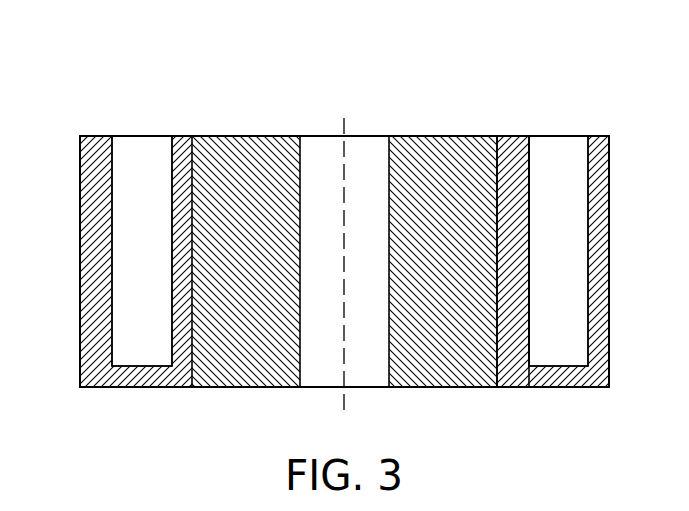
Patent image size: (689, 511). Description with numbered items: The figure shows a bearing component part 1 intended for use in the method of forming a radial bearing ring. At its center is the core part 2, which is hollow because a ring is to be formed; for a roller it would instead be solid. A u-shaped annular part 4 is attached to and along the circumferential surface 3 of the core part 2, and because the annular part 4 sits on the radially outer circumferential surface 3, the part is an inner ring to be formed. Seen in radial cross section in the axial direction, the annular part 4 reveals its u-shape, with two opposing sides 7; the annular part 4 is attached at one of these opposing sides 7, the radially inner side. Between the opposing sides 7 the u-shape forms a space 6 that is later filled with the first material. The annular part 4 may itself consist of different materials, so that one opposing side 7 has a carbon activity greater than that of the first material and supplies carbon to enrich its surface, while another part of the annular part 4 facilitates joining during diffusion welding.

The bearing component part 1 is at (228, 78).
The core part 2 is at (423, 153).
The circumferential surface 3 is at (495, 150).
The u-shaped annular part 4 is at (513, 153).
The space 6 is at (130, 160).
The opposing sides 7 is at (177, 232).